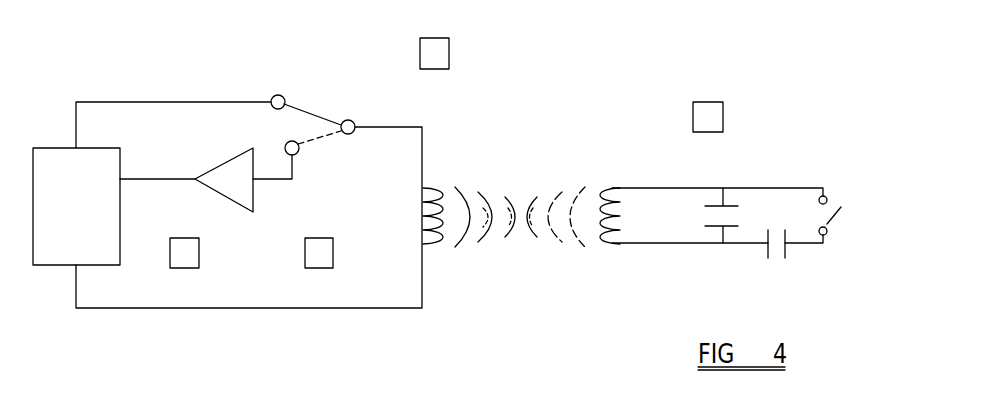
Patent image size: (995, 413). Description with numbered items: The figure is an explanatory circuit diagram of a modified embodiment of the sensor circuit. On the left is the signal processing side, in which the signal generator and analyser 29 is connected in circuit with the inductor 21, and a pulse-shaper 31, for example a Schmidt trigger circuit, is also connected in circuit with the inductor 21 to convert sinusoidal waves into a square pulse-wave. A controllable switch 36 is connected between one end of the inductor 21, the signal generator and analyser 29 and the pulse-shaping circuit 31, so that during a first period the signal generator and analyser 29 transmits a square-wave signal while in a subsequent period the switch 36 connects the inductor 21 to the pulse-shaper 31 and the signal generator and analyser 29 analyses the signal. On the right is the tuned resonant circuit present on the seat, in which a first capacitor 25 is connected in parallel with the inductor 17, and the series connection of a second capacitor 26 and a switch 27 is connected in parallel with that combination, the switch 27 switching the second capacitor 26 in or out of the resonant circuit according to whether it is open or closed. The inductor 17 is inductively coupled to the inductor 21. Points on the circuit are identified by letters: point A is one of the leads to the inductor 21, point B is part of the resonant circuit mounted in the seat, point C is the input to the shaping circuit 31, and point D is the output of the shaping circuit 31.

The signal generator and analyser 29 is at (63, 148).
The pulse-shaper 31 is at (225, 199).
The controllable switch 36 is at (315, 118).
The inductor 21 is at (438, 190).
The inductor 17 is at (613, 243).
The first capacitor 25 is at (710, 227).
The second capacitor 26 is at (787, 252).
The switch 27 is at (843, 215).
The point A is at (420, 53).
The point B is at (665, 188).
The point C is at (305, 253).
The point D is at (170, 253).